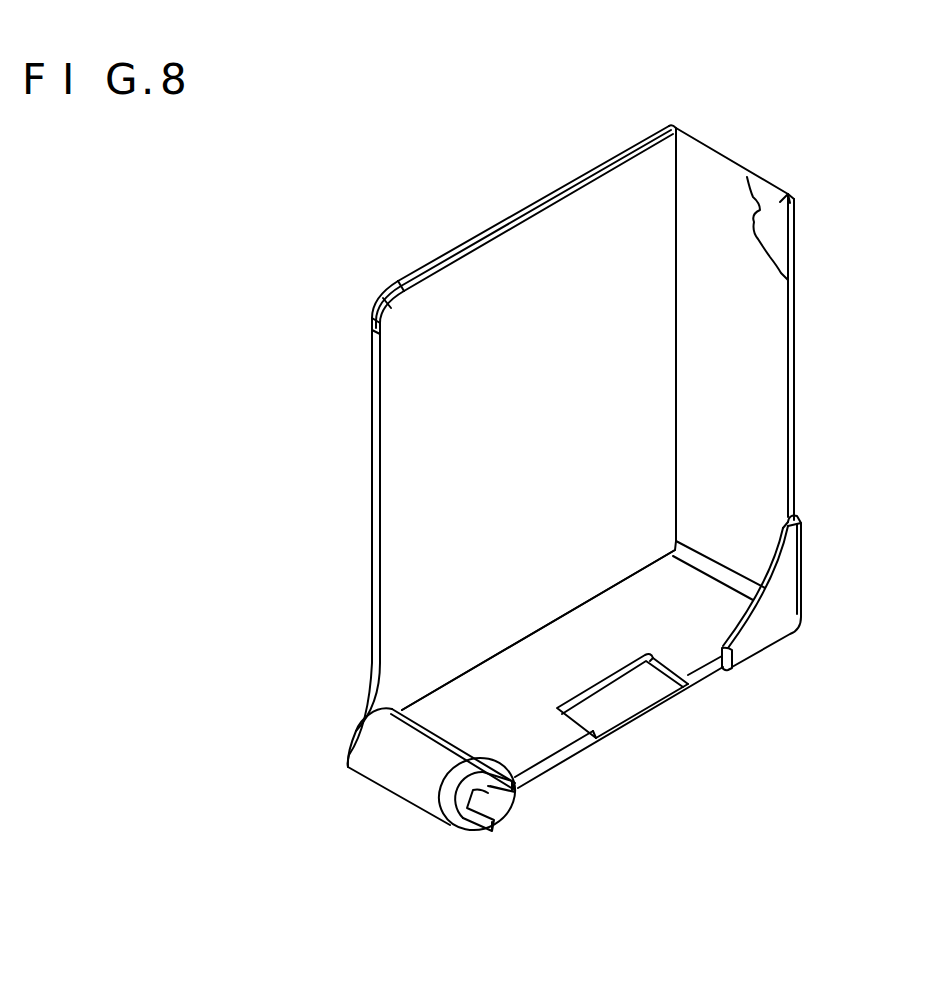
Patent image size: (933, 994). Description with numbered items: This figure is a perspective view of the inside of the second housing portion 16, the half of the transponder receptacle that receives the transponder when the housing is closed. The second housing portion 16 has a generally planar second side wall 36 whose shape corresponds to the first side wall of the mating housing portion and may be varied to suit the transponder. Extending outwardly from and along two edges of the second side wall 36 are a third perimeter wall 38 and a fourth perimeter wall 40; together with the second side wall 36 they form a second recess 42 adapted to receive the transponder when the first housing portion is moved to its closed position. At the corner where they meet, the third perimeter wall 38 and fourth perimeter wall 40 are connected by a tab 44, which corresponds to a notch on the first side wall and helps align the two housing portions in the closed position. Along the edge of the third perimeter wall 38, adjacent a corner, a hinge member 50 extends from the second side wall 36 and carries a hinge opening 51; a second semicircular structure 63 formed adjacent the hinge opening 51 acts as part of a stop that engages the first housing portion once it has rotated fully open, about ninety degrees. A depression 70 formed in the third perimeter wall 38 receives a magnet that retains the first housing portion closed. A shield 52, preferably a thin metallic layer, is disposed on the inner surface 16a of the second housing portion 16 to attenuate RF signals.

The second housing portion 16 is at (221, 409).
The inner surface 16a is at (790, 195).
The second side wall 36 is at (507, 273).
The third perimeter wall 38 is at (535, 747).
The fourth perimeter wall 40 is at (783, 383).
The second recess 42 is at (513, 557).
The tab 44 is at (778, 595).
The hinge member 50 is at (392, 775).
The hinge opening 51 is at (458, 800).
The shield 52 is at (736, 137).
The second semicircular structure 63 is at (500, 800).
The depression 70 is at (635, 703).